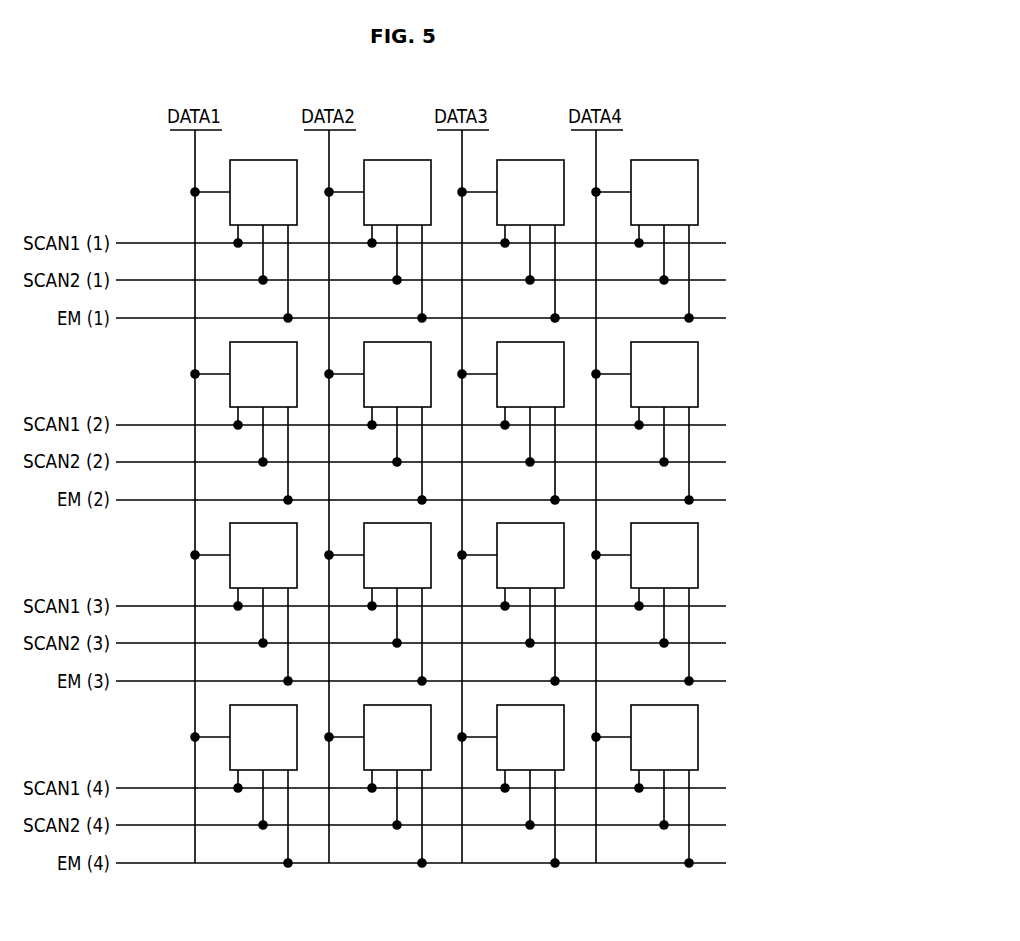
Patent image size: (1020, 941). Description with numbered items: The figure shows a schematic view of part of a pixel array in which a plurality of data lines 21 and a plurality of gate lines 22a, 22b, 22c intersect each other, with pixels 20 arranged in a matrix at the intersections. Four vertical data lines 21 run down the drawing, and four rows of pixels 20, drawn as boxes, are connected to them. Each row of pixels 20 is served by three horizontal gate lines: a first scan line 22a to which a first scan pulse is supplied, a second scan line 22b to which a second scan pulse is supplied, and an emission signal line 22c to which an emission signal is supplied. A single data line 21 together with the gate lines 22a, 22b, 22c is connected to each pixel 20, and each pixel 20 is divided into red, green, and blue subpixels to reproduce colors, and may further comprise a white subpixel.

The pixel 20 is at (698, 373).
The data line 21 is at (597, 135).
The first scan line 22a is at (710, 242).
The second scan line 22b is at (710, 280).
The emission signal line 22c is at (710, 318).